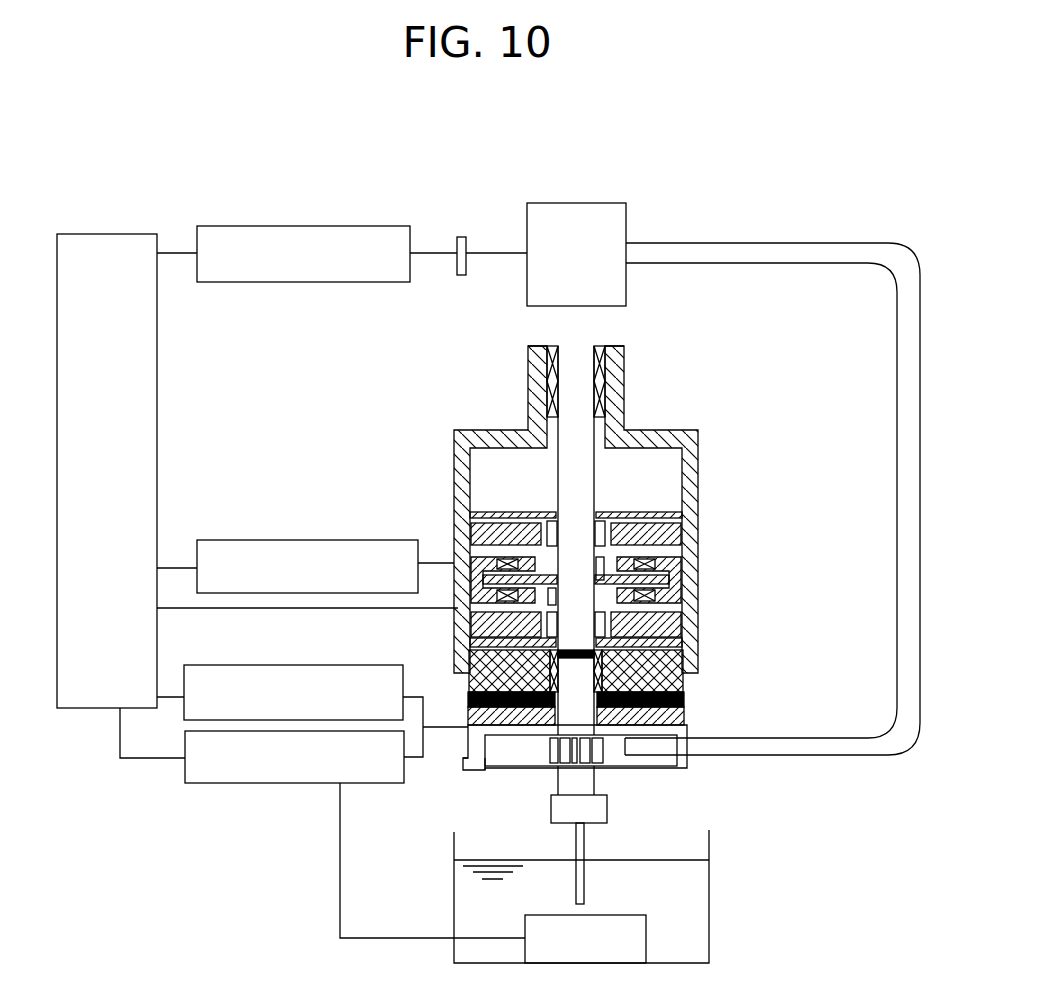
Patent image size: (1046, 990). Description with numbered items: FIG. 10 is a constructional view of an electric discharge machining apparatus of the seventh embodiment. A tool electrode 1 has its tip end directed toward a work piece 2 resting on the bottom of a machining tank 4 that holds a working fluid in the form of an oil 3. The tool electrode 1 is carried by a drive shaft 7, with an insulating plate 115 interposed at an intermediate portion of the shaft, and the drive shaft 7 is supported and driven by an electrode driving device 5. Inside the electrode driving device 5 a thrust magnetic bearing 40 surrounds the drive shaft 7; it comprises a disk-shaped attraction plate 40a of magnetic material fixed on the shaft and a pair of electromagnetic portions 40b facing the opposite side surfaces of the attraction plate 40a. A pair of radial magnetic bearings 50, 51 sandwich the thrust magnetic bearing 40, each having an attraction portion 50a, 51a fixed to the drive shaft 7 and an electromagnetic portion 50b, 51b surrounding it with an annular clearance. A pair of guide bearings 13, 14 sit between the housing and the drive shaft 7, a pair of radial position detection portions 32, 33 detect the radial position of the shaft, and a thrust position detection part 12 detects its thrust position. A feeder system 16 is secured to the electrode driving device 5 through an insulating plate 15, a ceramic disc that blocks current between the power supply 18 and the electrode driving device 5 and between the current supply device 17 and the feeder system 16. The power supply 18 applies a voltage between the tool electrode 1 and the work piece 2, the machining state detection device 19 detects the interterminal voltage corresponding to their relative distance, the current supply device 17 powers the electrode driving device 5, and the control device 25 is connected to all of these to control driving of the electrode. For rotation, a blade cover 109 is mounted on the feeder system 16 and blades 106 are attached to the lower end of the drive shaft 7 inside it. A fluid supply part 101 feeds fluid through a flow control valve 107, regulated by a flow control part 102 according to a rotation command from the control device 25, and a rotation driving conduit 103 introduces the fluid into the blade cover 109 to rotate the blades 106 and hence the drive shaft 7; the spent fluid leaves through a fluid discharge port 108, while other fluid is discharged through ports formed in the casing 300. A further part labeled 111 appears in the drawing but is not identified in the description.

The tool electrode 1 is at (585, 842).
The work piece 2 is at (646, 948).
The oil 3 is at (697, 832).
The machining tank 4 is at (709, 864).
The electrode driving device 5 is at (490, 575).
The drive shaft 7 is at (585, 478).
The thrust position detection part 12 is at (455, 712).
The guide bearing 13 is at (600, 342).
The guide bearing 14 is at (700, 664).
The insulating plate 15 is at (688, 693).
The feeder system 16 is at (688, 712).
The current supply device 17 is at (280, 540).
The power supply 18 is at (210, 783).
The machining state detection device 19 is at (300, 665).
The control device 25 is at (106, 234).
The radial position detection portion 32 is at (698, 505).
The radial position detection portion 33 is at (690, 626).
The thrust magnetic bearing 40 is at (683, 556).
The attraction plate 40a is at (480, 590).
The electromagnetic portions 40b is at (480, 600).
The radial magnetic bearing 50 is at (698, 462).
The attraction portion 50a is at (540, 513).
The electromagnetic portion 50b is at (683, 522).
The radial magnetic bearing 51 is at (485, 747).
The attraction portion 51a is at (470, 642).
The electromagnetic portion 51b is at (683, 615).
The fluid supply part 101 is at (626, 222).
The flow control part 102 is at (306, 226).
The rotation driving conduit 103 is at (838, 755).
The blades 106 is at (550, 752).
The flow control valve 107 is at (462, 237).
The fluid discharge port 108 is at (480, 772).
The blade cover 109 is at (467, 766).
The stator core 111 is at (683, 582).
The insulating plate 115 is at (575, 645).
The casing 300 is at (624, 387).